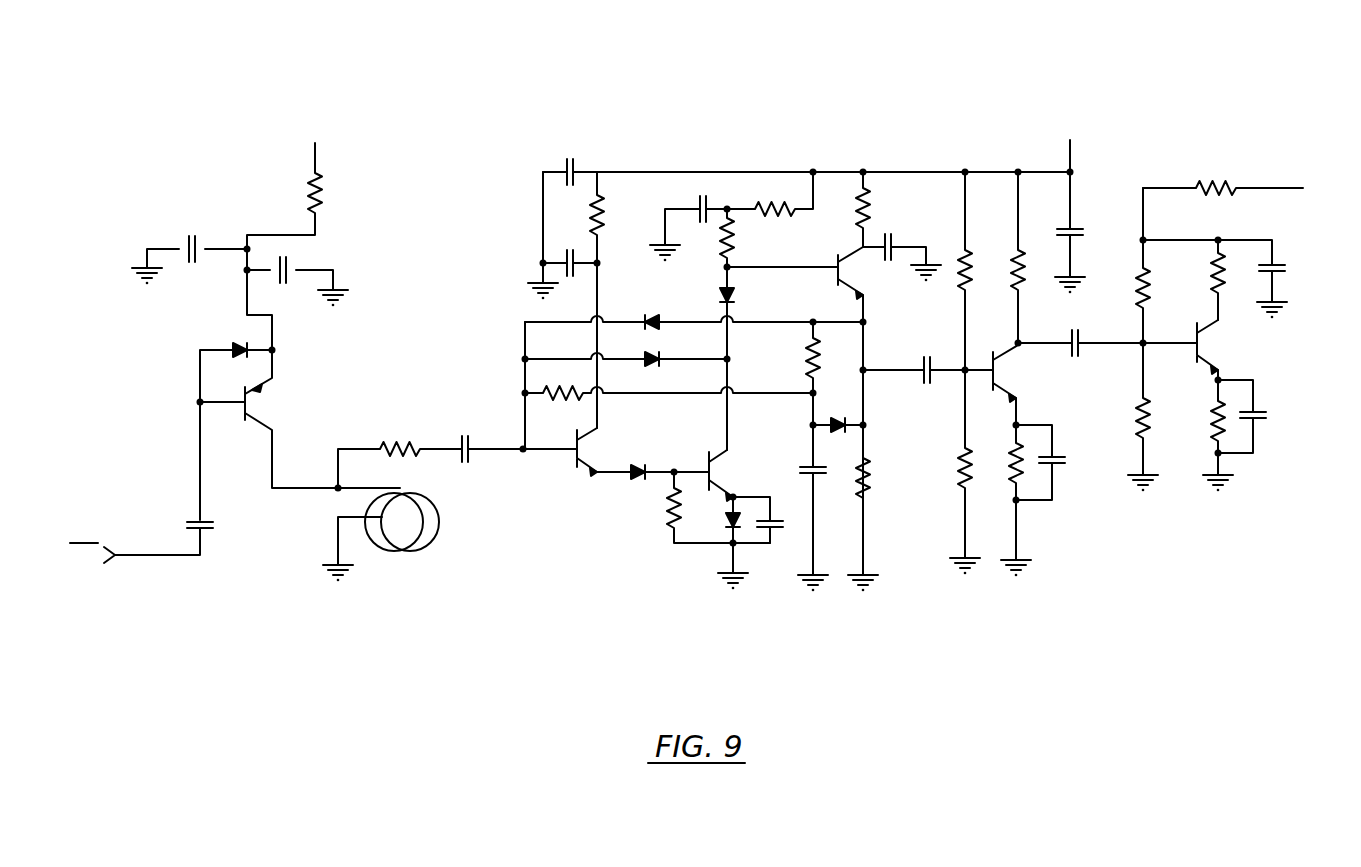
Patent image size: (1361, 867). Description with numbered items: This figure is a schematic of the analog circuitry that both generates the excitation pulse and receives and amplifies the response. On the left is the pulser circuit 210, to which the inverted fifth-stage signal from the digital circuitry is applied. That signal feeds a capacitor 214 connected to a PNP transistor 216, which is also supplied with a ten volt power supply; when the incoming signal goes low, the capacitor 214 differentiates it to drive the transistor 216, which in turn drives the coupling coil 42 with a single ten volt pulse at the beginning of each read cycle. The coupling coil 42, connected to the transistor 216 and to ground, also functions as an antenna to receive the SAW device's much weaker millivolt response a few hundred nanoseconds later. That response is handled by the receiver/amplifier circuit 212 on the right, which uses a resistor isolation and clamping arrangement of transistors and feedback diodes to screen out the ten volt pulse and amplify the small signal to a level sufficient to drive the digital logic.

The pulser circuit 210 is at (300, 608).
The receiver/amplifier circuit 212 is at (1116, 583).
The capacitor 214 is at (187, 517).
The PNP transistor 216 is at (260, 407).
The coupling coil 42 is at (407, 552).